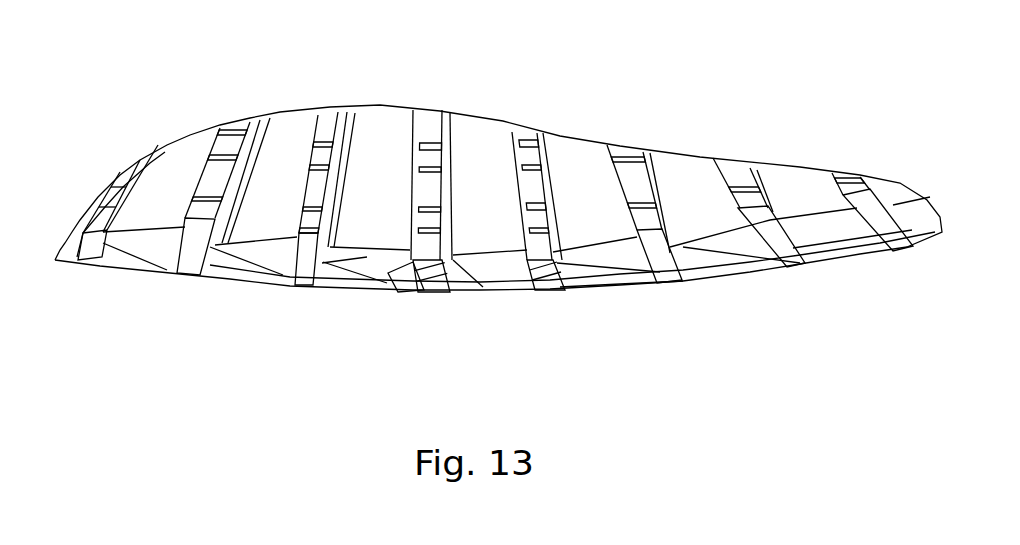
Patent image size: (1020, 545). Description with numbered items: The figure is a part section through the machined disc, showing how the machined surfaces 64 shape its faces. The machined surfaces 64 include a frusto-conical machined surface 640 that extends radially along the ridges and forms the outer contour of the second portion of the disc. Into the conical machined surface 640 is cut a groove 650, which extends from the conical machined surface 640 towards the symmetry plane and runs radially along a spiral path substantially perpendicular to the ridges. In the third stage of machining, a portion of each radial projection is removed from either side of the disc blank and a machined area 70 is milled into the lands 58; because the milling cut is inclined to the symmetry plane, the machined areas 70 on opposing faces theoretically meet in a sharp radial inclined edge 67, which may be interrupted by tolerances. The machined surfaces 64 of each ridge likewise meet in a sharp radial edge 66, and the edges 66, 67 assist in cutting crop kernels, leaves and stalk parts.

The groove 650 is at (227, 128).
The conical machined surface 640 is at (340, 120).
The lands 58 is at (363, 228).
The machined area 70 is at (507, 257).
The radial inclined edge 67 is at (607, 275).
The machined surfaces 64 is at (672, 262).
The radial edge 66 is at (797, 273).